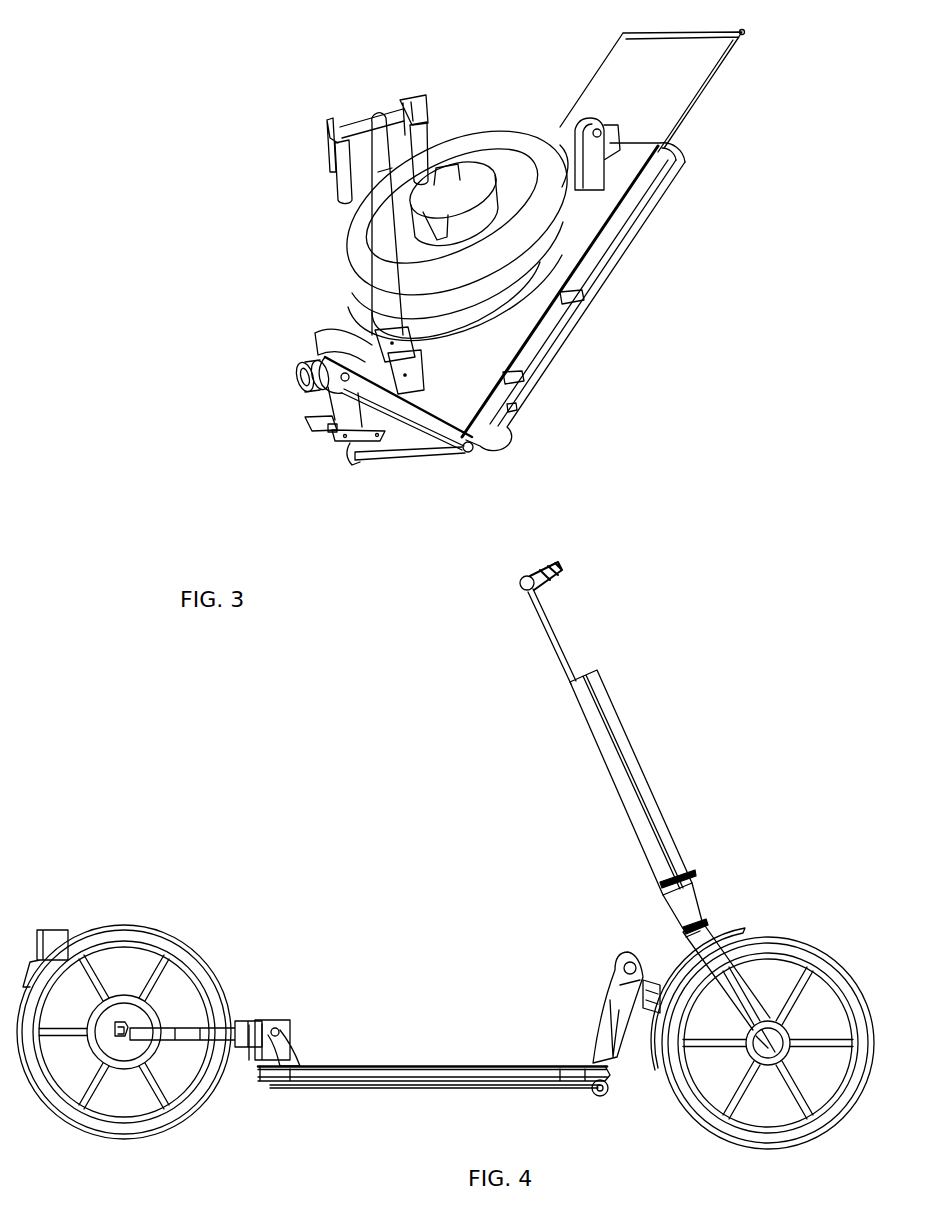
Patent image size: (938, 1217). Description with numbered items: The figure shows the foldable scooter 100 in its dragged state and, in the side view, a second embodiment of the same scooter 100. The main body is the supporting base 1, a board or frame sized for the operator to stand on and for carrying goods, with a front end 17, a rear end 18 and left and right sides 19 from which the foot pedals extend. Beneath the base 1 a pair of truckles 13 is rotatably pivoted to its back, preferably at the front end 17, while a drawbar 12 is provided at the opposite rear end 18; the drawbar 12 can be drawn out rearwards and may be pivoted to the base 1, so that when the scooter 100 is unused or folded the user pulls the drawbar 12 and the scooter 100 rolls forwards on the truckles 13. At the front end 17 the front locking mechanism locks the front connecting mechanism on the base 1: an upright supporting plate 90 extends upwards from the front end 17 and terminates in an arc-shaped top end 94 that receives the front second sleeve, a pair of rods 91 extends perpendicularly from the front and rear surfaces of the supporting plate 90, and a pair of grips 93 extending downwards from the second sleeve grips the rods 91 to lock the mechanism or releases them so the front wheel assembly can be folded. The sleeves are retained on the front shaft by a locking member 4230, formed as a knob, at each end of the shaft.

In FIG. 3, the foldable scooter 100 is at (158, 27).
In FIG. 4, the foldable scooter 100 is at (720, 710).
In FIG. 3, the supporting base 1 is at (600, 336).
In FIG. 3, the drawbar 12 is at (720, 65).
In FIG. 3, the truckles 13 is at (465, 447).
In FIG. 3, the front end 17 is at (357, 460).
In FIG. 3, the rear end 18 is at (644, 134).
In FIG. 3, the left and right sides 19 is at (598, 247).
In FIG. 3, the supporting plate 90 is at (327, 423).
In FIG. 3, the rods 91 is at (325, 432).
In FIG. 3, the grips 93 is at (322, 342).
In FIG. 3, the arc-shaped top end 94 is at (593, 128).
In FIG. 3, the locking member 4230 is at (303, 378).